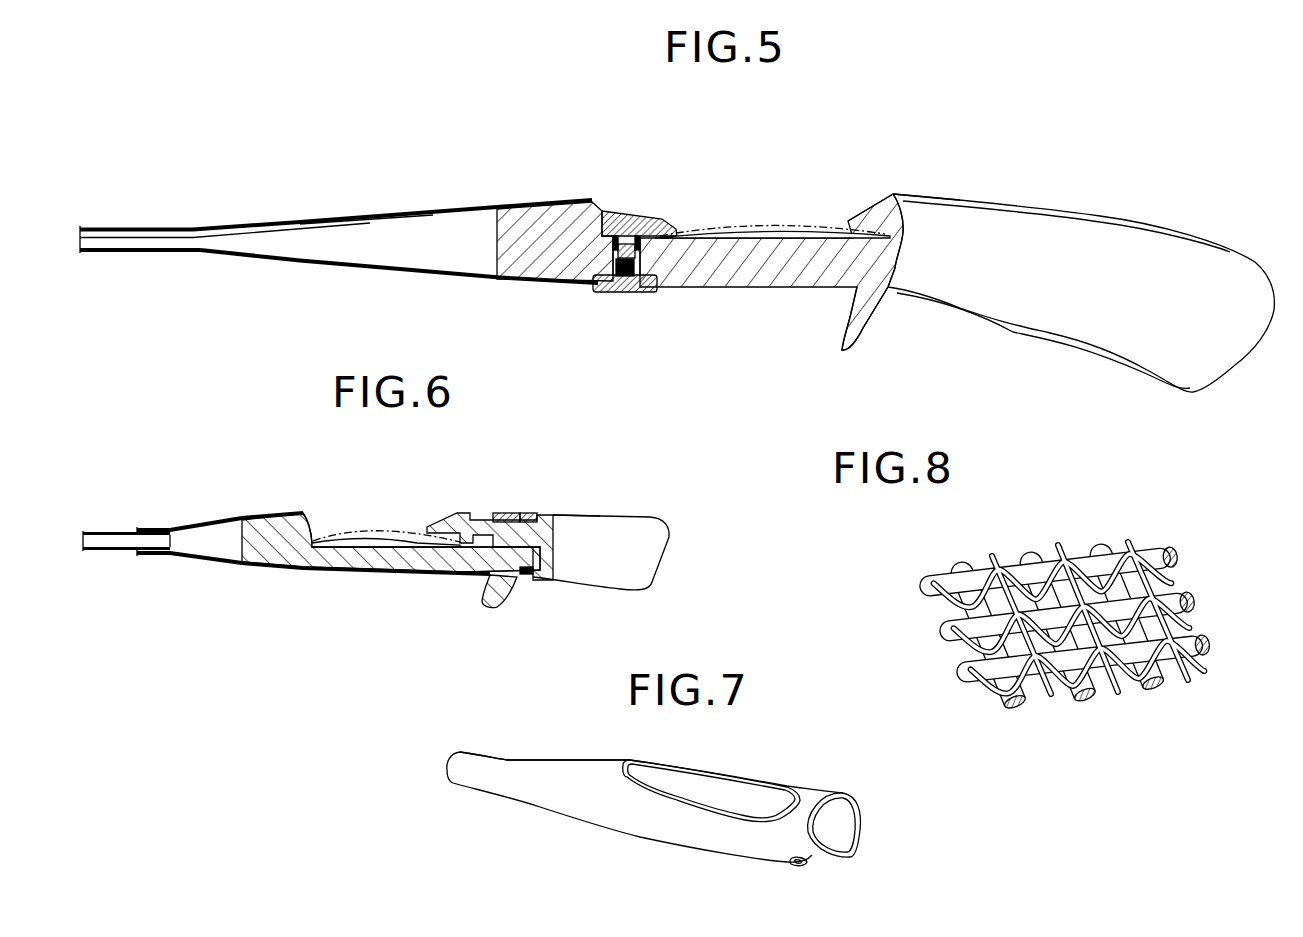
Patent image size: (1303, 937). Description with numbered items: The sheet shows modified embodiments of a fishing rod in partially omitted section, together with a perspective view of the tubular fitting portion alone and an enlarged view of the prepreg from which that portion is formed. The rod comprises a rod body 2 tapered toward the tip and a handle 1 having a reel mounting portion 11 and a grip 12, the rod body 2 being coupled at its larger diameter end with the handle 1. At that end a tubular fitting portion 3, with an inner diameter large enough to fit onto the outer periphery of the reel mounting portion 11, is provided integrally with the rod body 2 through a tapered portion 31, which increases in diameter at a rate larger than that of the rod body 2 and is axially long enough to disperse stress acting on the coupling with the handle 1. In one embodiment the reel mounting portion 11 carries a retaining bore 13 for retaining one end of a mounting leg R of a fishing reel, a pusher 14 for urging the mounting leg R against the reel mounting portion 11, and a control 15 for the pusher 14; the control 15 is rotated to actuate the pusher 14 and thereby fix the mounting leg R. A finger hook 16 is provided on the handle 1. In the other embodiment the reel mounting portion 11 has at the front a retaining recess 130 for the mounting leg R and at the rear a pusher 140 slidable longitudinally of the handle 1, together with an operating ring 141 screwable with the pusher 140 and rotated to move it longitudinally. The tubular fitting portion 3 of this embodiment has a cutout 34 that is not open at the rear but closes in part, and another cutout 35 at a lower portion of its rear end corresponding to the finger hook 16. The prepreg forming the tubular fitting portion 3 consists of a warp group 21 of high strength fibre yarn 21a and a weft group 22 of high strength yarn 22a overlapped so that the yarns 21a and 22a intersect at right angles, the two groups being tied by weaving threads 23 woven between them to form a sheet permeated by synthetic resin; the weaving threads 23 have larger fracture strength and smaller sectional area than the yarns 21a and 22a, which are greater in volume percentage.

In FIG. 5, the handle 1 is at (905, 195).
In FIG. 6, the handle 1 is at (640, 518).
In FIG. 5, the rod body 2 is at (150, 227).
In FIG. 6, the rod body 2 is at (103, 532).
In FIG. 5, the tubular fitting portion 3 is at (536, 202).
In FIG. 6, the tubular fitting portion 3 is at (200, 520).
In FIG. 7, the tubular fitting portion 3 is at (577, 756).
In FIG. 5, the reel mounting portion 11 is at (728, 240).
In FIG. 6, the reel mounting portion 11 is at (408, 546).
In FIG. 5, the grip 12 is at (1090, 214).
In FIG. 6, the grip 12 is at (607, 520).
In FIG. 5, the retaining bore 13 is at (862, 235).
In FIG. 5, the pusher 14 is at (638, 215).
In FIG. 5, the control 15 is at (620, 293).
In FIG. 5, the finger hook 16 is at (866, 342).
In FIG. 6, the finger hook 16 is at (507, 585).
In FIG. 5, the tapered portion 31 is at (372, 215).
In FIG. 6, the tapered portion 31 is at (230, 520).
In FIG. 7, the tapered portion 31 is at (545, 777).
In FIG. 6, the cutout 34 is at (308, 513).
In FIG. 7, the cutout 34 is at (762, 790).
In FIG. 6, the cutout 35 is at (487, 590).
In FIG. 7, the cutout 35 is at (840, 857).
In FIG. 6, the retaining recess 130 is at (314, 540).
In FIG. 6, the pusher 140 is at (455, 527).
In FIG. 6, the operating ring 141 is at (516, 513).
In FIG. 5, the mounting leg R is at (800, 224).
In FIG. 6, the mounting leg R is at (368, 538).
In FIG. 8, the warp group 21 is at (1056, 581).
In FIG. 8, the high strength fibre yarn 21a is at (960, 562).
In FIG. 8, the weft group 22 is at (1015, 615).
In FIG. 8, the high strength yarn 22a is at (920, 587).
In FIG. 8, the weaving threads 23 is at (1062, 698).